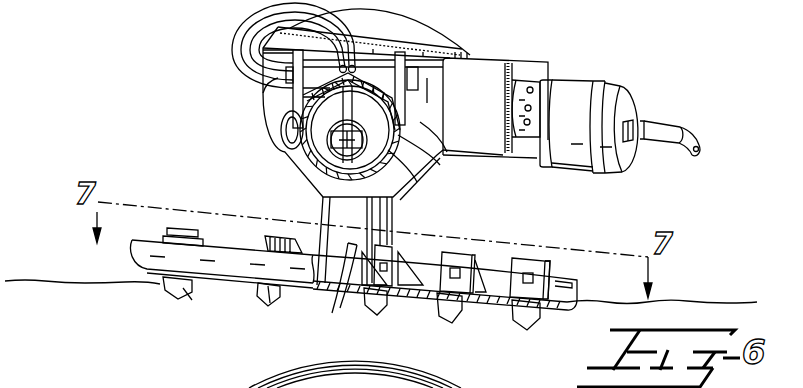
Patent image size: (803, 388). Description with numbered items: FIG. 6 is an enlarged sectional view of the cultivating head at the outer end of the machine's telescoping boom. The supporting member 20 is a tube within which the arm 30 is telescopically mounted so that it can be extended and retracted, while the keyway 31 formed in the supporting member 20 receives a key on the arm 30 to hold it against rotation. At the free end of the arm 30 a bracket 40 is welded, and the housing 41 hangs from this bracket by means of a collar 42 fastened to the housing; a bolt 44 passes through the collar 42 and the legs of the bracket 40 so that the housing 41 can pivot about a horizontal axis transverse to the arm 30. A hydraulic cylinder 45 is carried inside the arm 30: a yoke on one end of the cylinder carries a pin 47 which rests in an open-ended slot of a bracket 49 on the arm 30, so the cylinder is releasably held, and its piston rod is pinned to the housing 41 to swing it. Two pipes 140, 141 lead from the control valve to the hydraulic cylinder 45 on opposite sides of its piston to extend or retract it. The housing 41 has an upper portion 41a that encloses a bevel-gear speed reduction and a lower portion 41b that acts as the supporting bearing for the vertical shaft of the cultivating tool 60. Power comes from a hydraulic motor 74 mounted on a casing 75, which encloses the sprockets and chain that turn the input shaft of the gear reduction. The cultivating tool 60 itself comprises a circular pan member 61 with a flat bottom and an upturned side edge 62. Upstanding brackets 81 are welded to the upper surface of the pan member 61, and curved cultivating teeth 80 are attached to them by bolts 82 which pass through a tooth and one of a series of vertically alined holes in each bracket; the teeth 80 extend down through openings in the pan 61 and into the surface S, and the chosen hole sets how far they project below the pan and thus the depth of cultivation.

The supporting member 20 is at (410, 170).
The arm 30 is at (300, 133).
The keyway 31 is at (240, 112).
The bracket 40 is at (288, 80).
The housing 41 is at (414, 25).
The upper portion 41a is at (504, 158).
The lower portion 41b is at (394, 207).
The collar 42 is at (312, 63).
The bolt 44 is at (277, 86).
The hydraulic cylinder 45 is at (330, 142).
The pin 47 is at (345, 158).
The bracket 49 is at (327, 168).
The cultivating tool 60 is at (233, 218).
The pan member 61 is at (472, 306).
The upturned side edge 62 is at (574, 283).
The hydraulic motor 74 is at (580, 88).
The casing 75 is at (493, 65).
The cultivating teeth 80 is at (260, 298).
The upstanding brackets 81 is at (550, 265).
The bolts 82 is at (528, 273).
The pipe 140 is at (244, 17).
The pipe 141 is at (251, 36).
The surface S is at (50, 272).